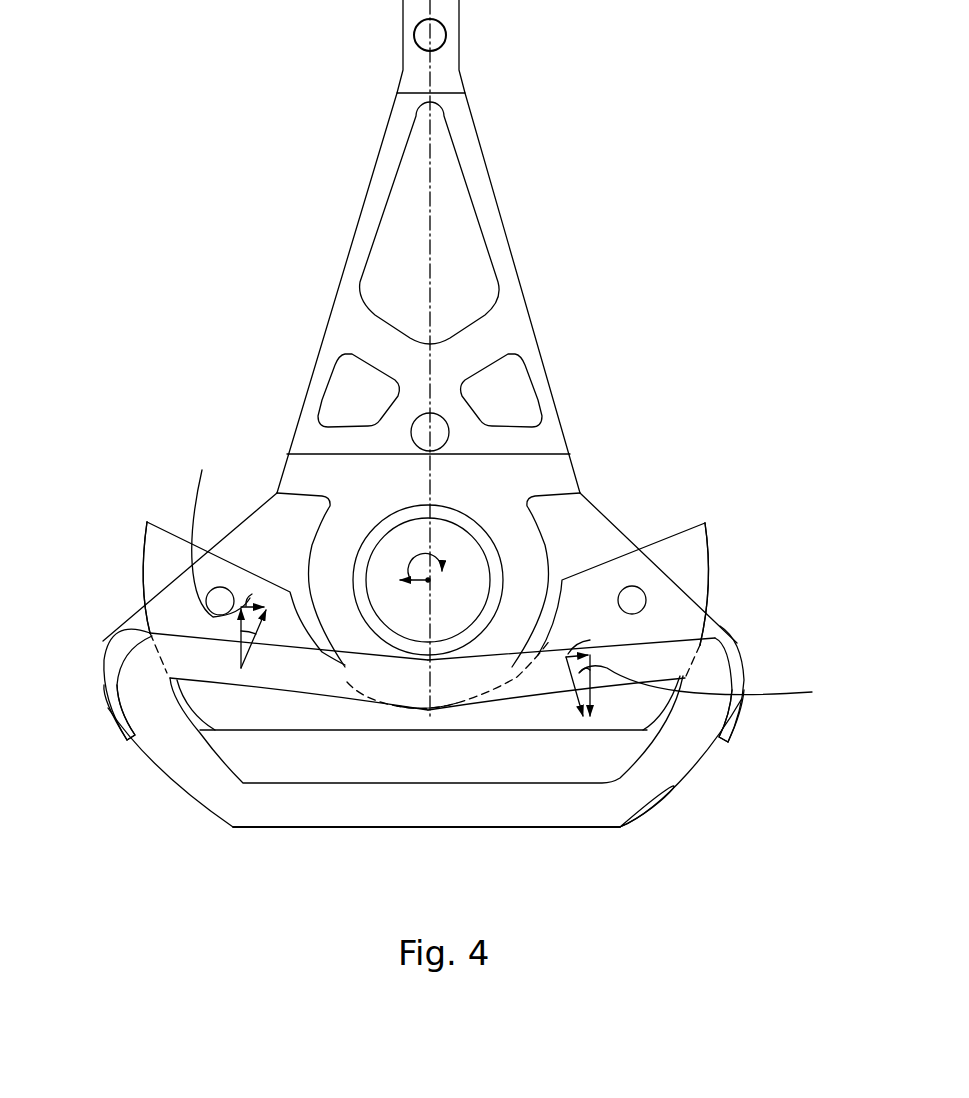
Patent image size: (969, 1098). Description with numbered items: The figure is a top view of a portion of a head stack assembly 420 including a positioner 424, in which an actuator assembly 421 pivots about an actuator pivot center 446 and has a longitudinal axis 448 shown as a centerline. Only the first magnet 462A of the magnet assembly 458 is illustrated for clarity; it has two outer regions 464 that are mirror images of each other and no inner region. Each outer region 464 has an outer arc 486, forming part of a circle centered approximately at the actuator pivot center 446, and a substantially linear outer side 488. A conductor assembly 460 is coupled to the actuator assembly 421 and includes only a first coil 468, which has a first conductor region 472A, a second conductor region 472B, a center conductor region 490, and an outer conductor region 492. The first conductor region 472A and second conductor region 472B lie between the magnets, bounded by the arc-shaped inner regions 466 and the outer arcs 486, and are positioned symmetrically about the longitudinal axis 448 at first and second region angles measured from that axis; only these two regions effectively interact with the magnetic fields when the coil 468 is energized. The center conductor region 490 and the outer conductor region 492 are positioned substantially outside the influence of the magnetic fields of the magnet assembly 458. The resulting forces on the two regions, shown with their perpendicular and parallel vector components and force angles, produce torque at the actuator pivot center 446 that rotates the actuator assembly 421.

The head stack assembly 420 is at (242, 334).
The actuator assembly 421 is at (579, 465).
The longitudinal axis 448 is at (432, 183).
The actuator pivot center 446 is at (430, 580).
The inner regions 466 is at (350, 675).
The outer regions 464 is at (170, 536).
The positioner 424 is at (714, 531).
The first magnet 462A is at (143, 568).
The outer arc 486 is at (185, 700).
The first conductor region 472A is at (114, 624).
The second conductor region 472B is at (672, 652).
The magnet assembly 458 is at (207, 712).
The center conductor region 490 is at (447, 690).
The outer side 488 is at (272, 735).
The outer conductor region 492 is at (350, 828).
The conductor assembly 460 is at (521, 832).
The first coil 468 is at (592, 812).